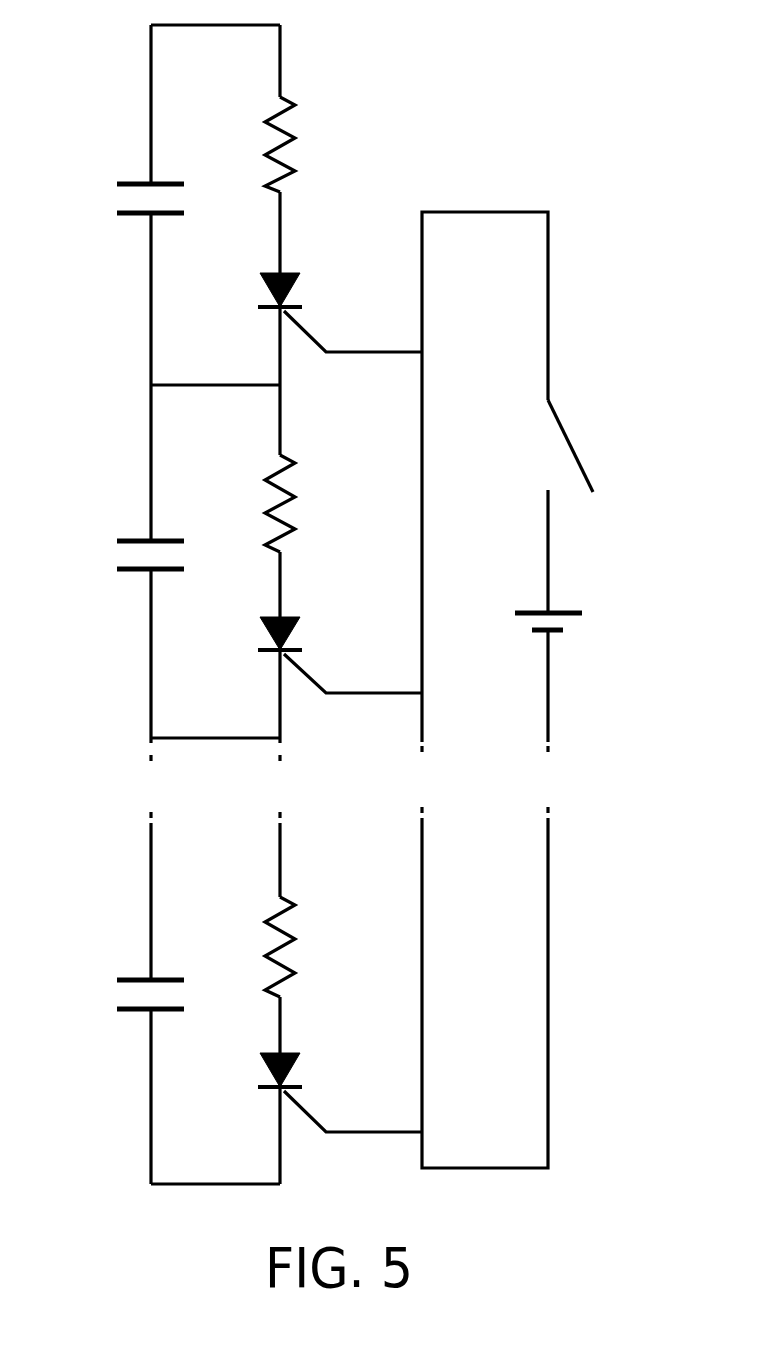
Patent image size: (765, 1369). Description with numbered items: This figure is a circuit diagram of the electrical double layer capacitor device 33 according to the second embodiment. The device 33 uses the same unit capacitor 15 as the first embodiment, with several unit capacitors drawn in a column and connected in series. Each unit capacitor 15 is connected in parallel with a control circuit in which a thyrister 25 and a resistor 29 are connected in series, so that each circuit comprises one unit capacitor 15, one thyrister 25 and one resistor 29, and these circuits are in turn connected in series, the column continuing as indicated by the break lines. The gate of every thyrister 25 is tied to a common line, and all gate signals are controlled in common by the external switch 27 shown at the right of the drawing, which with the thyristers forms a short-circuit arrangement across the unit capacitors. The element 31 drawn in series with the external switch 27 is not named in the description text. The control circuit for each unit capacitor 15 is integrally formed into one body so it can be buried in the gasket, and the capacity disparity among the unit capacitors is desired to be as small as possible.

The unit electrical double layer capacitor 15 is at (116, 201).
The thyrister 25 is at (288, 273).
The external switch 27 is at (567, 432).
The resistor 29 is at (291, 126).
The battery 31 is at (567, 610).
The electrical double layer capacitor device 33 is at (309, 55).